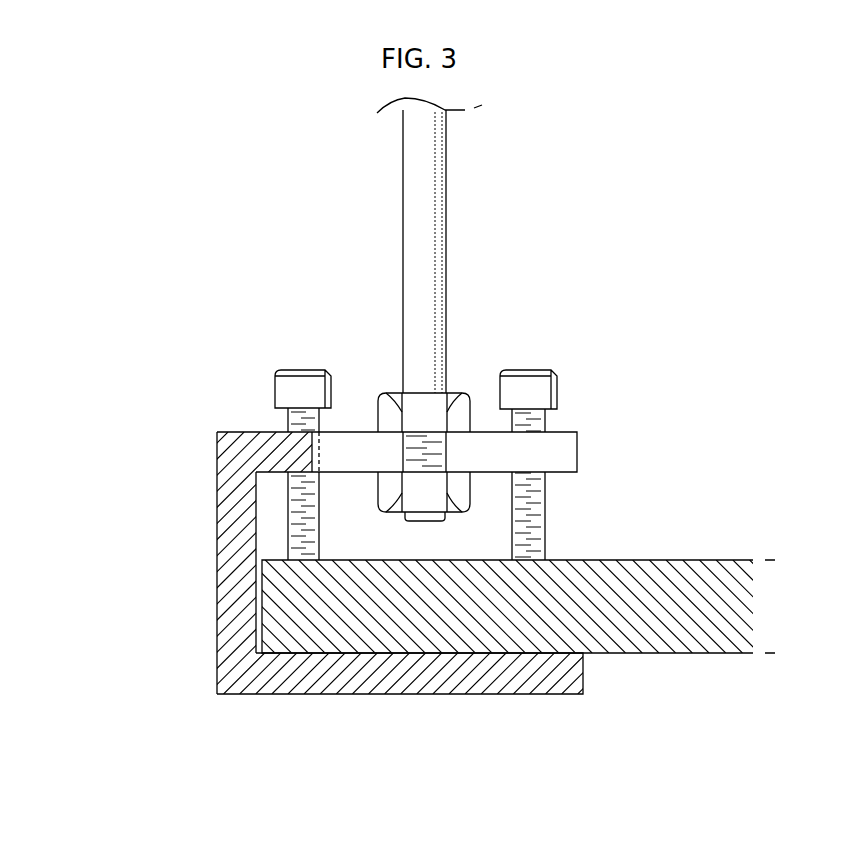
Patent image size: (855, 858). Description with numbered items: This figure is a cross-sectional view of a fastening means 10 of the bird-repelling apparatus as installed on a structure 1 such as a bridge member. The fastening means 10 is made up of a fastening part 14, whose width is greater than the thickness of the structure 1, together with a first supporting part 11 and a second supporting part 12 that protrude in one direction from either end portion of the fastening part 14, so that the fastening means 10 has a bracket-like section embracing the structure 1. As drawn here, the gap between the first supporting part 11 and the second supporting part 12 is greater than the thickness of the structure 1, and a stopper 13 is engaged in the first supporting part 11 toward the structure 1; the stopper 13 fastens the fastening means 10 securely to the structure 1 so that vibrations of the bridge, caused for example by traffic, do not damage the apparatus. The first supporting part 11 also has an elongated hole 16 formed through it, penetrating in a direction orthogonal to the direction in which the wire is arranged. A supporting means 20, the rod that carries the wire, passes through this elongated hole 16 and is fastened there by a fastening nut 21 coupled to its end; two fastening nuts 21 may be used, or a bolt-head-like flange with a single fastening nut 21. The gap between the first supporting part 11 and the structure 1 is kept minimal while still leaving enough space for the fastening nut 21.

The structure 1 is at (658, 580).
The fastening means 10 is at (66, 478).
The first supporting part 11 is at (274, 442).
The second supporting part 12 is at (375, 683).
The stopper 13 is at (300, 387).
The fastening part 14 is at (237, 555).
The elongated hole 16 is at (313, 455).
The supporting means 20 is at (443, 196).
The fastening nut 21 is at (460, 406).